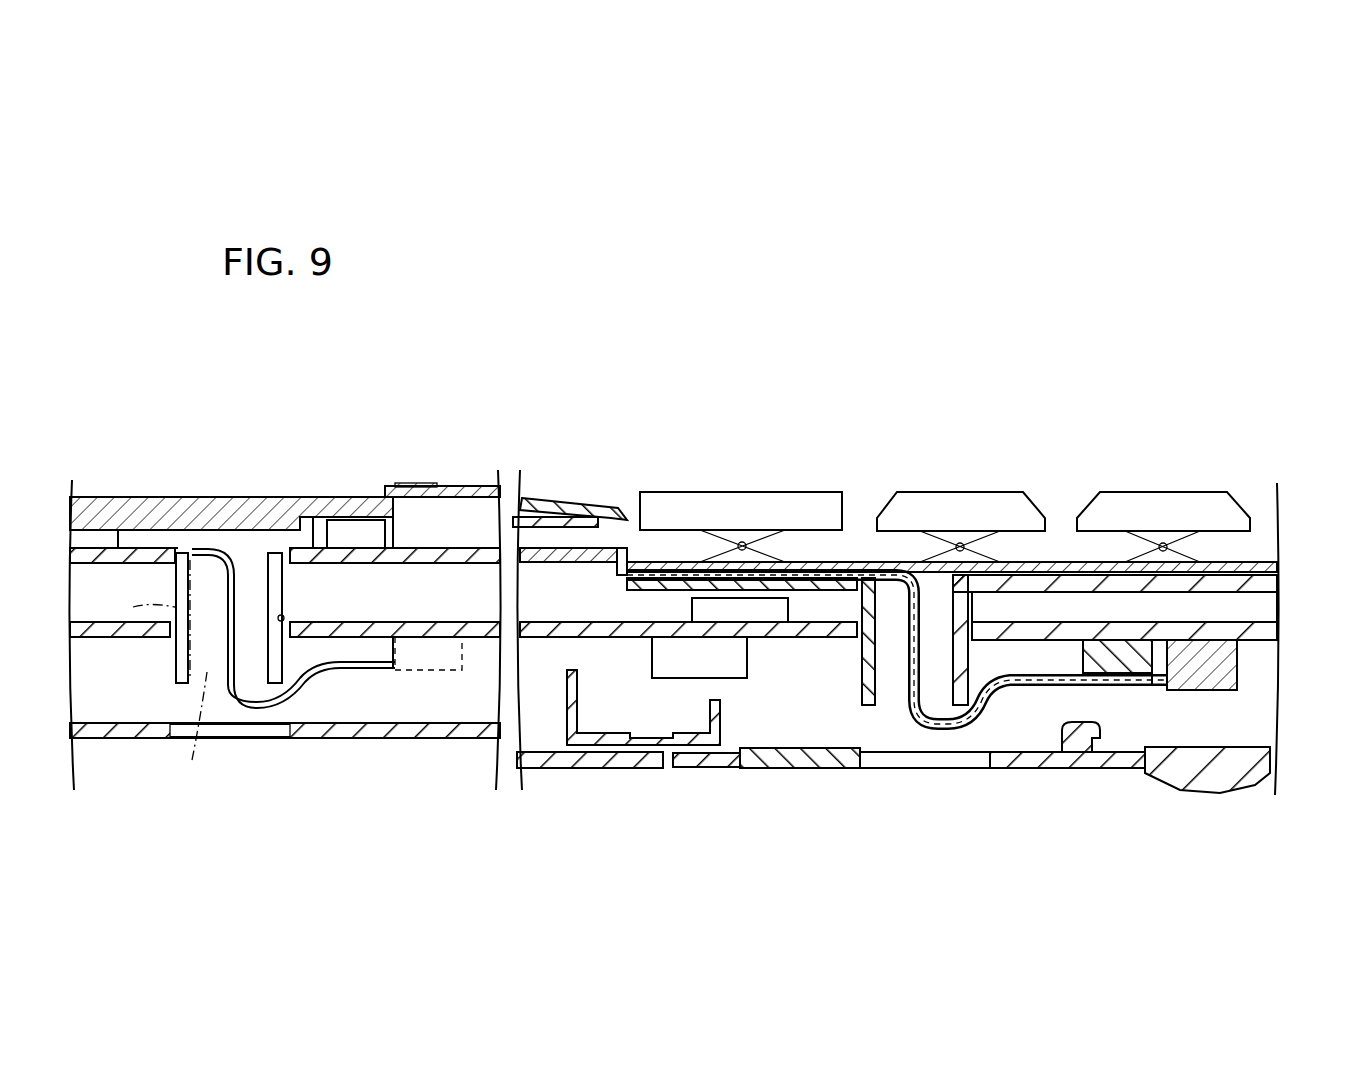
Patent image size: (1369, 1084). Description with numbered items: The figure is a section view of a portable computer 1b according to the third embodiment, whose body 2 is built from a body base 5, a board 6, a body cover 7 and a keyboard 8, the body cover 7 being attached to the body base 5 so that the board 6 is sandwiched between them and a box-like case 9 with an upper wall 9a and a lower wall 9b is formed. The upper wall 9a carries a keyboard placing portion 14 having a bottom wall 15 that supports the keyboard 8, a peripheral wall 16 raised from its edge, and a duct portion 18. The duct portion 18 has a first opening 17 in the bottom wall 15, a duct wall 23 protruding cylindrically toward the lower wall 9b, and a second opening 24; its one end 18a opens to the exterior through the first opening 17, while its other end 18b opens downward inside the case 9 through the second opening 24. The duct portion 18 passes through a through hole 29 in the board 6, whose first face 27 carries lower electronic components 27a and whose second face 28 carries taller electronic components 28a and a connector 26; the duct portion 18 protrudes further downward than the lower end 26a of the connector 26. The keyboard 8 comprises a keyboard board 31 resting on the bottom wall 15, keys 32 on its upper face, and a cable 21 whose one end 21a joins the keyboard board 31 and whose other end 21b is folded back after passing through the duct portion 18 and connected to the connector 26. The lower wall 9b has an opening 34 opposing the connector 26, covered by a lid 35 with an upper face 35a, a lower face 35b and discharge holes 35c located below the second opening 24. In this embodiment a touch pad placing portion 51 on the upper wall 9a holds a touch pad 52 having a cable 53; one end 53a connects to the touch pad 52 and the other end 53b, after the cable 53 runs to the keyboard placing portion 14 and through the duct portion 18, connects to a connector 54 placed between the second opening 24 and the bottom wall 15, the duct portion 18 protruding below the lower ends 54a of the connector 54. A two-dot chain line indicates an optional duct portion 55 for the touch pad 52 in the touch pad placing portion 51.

The portable computer 1b is at (1185, 206).
The body 2 is at (1070, 266).
The body base 5 is at (1276, 765).
The board 6 is at (1276, 632).
The body cover 7 is at (1276, 585).
The keyboard 8 is at (1276, 567).
The case 9 is at (110, 742).
The upper wall 9a is at (447, 548).
The lower wall 9b is at (414, 738).
The keyboard placing portion 14 is at (1210, 575).
The bottom wall 15 is at (377, 558).
The peripheral wall 16 is at (610, 548).
The first opening 17 is at (262, 553).
The duct portion 18 is at (858, 652).
The one end 18a is at (860, 594).
The other end 18b is at (862, 704).
The cable 21 is at (940, 721).
The one end 21a is at (627, 568).
The other end 21b is at (1058, 682).
The duct wall 23 is at (992, 660).
The second opening 24 is at (885, 705).
The connector 26 is at (1118, 662).
The lower end 26a is at (1080, 742).
The first face 27 is at (570, 620).
The electronic components 27a is at (690, 612).
The second face 28 is at (545, 640).
The electronic components 28a is at (655, 655).
The through hole 29 is at (282, 618).
The keyboard board 31 is at (855, 562).
The keys 32 is at (750, 500).
The opening 34 is at (667, 768).
The lid 35 is at (830, 774).
The upper face 35a is at (773, 748).
The lower face 35b is at (770, 768).
The discharge holes 35c is at (290, 740).
The touch pad placing portion 51 is at (305, 546).
The touch pad 52 is at (195, 500).
The cable 53 is at (248, 716).
The one end 53a is at (122, 530).
The other end 53b is at (365, 670).
The connector 54 is at (460, 720).
The lower ends 54a is at (420, 670).
The duct portion 55 is at (170, 648).